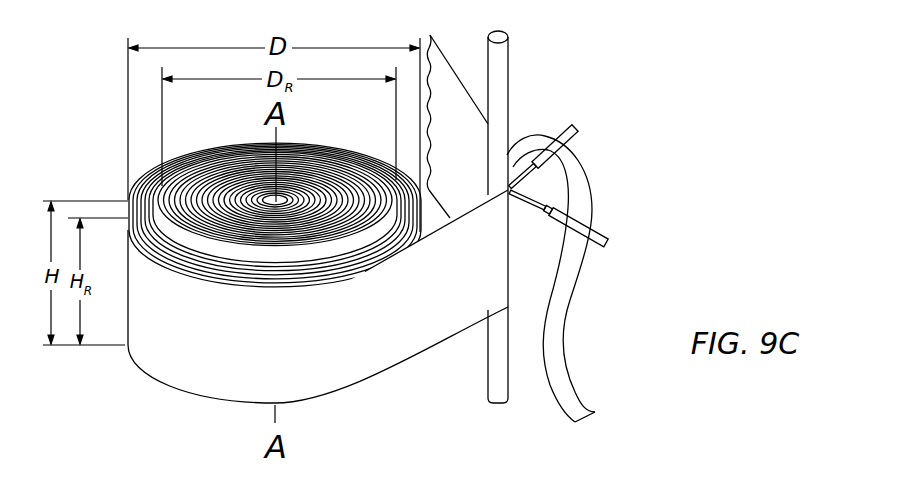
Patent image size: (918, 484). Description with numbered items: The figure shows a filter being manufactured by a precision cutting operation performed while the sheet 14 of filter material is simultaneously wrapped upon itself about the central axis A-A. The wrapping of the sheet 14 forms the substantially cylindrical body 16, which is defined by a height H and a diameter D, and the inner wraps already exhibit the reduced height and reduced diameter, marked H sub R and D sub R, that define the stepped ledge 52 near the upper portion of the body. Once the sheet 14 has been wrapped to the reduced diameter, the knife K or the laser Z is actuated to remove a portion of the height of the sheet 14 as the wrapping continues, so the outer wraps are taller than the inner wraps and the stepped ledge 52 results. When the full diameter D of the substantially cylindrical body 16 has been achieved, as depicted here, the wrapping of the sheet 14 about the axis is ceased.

The sheet of filter material 14 is at (458, 212).
The substantially cylindrical body 16 is at (119, 328).
The stepped ledge 52 is at (146, 184).
The knife K is at (566, 127).
The laser Z is at (607, 224).